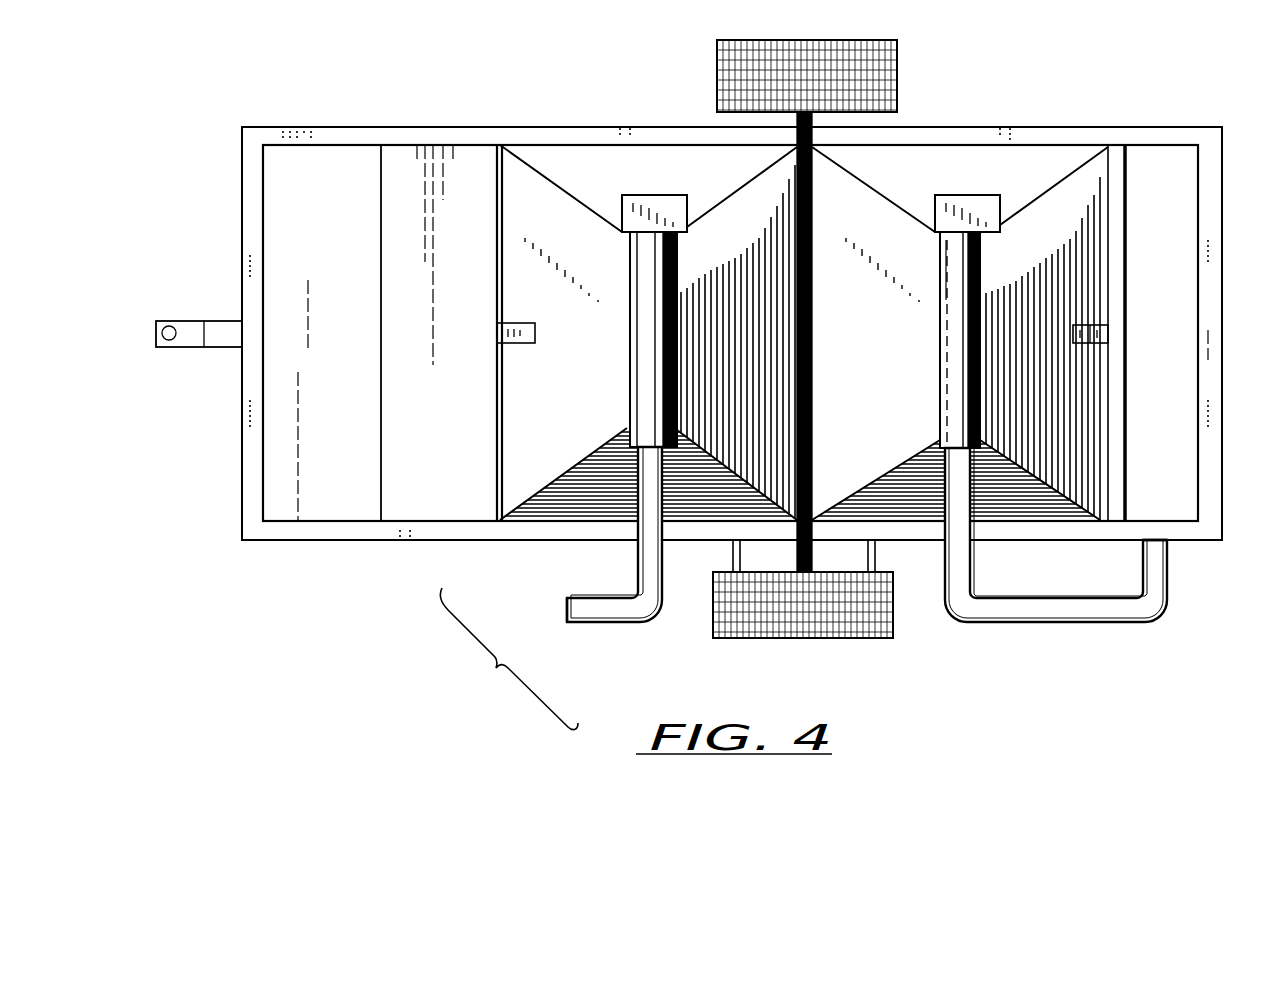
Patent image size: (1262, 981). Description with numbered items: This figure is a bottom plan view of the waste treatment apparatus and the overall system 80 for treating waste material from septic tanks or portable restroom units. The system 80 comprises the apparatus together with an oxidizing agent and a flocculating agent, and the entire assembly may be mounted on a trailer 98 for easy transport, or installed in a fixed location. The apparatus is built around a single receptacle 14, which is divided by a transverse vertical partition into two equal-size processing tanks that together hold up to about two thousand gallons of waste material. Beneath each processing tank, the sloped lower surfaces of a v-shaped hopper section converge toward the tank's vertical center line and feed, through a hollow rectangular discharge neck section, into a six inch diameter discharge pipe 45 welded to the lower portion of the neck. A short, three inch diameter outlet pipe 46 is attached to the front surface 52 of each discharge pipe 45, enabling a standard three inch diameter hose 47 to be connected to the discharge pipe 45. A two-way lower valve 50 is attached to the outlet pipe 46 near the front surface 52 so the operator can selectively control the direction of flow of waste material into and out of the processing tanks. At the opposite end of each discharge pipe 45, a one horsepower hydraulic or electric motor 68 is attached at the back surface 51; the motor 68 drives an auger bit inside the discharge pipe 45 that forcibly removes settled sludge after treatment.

The receptacle 14 is at (520, 113).
The trailer 98 is at (280, 120).
The motor 68 is at (650, 205).
The discharge pipe 45 is at (640, 363).
The back surface 51 is at (955, 258).
The front surface 52 is at (952, 422).
The lower valve 50 is at (605, 500).
The outlet pipe 46 is at (665, 508).
The hose 47 is at (620, 605).
The system 80 is at (509, 659).